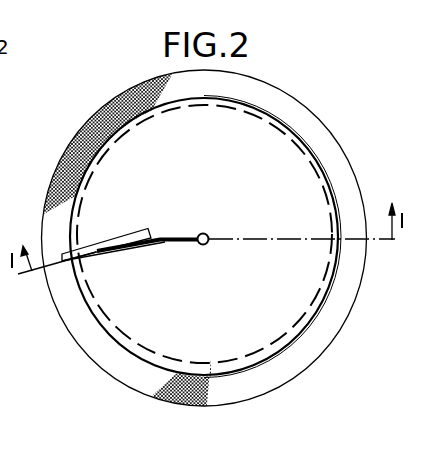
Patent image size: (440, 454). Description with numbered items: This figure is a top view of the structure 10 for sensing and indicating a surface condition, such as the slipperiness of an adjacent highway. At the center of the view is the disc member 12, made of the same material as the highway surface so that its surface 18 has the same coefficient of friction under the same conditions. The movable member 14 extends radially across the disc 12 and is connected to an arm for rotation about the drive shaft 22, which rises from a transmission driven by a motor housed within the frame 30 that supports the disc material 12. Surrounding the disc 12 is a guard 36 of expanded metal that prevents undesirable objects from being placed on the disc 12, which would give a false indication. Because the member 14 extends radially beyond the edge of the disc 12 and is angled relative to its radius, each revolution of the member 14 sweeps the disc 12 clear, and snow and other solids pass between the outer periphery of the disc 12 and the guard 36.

The structure for sensing and indicating a surface condition 10 is at (122, 394).
The disc member 12 is at (318, 280).
The movable member 14 is at (97, 252).
The surface of the disc 18 is at (240, 291).
The drive shaft 22 is at (206, 234).
The frame 30 is at (11, 114).
The guard 36 is at (323, 124).